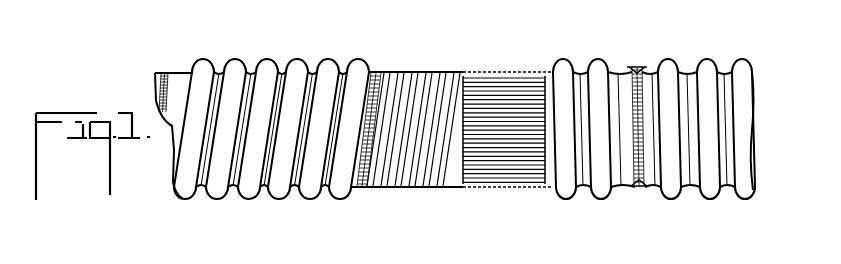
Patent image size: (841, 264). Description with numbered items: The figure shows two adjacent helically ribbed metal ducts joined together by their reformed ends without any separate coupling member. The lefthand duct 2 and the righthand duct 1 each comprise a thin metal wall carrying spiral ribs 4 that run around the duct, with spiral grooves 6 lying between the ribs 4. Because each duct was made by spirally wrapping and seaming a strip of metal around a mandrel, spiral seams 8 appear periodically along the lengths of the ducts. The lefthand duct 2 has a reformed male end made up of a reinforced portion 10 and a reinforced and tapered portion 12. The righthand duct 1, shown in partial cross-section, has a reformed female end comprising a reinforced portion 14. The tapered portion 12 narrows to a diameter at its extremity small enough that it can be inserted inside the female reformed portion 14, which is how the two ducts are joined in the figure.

The righthand duct 1 is at (743, 130).
The lefthand duct 2 is at (186, 72).
The spiral ribs 4 is at (265, 72).
The spiral grooves 6 is at (221, 71).
The spiral seams 8 is at (164, 73).
The reinforced portion 10 is at (416, 162).
The reinforced and tapered portion 12 is at (501, 158).
The reinforced portion 14 is at (498, 72).